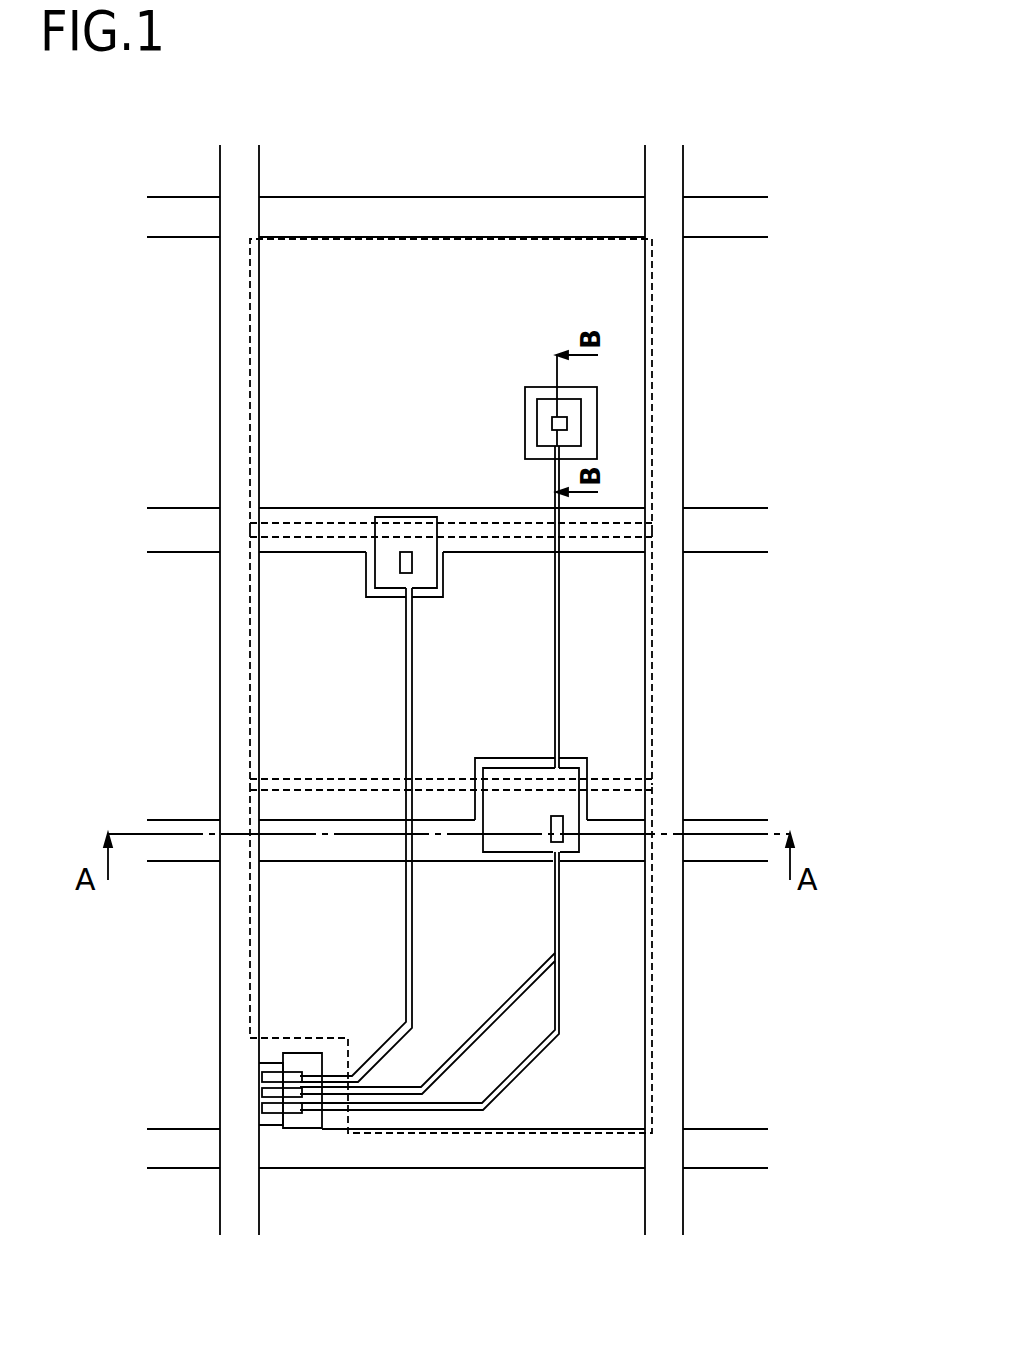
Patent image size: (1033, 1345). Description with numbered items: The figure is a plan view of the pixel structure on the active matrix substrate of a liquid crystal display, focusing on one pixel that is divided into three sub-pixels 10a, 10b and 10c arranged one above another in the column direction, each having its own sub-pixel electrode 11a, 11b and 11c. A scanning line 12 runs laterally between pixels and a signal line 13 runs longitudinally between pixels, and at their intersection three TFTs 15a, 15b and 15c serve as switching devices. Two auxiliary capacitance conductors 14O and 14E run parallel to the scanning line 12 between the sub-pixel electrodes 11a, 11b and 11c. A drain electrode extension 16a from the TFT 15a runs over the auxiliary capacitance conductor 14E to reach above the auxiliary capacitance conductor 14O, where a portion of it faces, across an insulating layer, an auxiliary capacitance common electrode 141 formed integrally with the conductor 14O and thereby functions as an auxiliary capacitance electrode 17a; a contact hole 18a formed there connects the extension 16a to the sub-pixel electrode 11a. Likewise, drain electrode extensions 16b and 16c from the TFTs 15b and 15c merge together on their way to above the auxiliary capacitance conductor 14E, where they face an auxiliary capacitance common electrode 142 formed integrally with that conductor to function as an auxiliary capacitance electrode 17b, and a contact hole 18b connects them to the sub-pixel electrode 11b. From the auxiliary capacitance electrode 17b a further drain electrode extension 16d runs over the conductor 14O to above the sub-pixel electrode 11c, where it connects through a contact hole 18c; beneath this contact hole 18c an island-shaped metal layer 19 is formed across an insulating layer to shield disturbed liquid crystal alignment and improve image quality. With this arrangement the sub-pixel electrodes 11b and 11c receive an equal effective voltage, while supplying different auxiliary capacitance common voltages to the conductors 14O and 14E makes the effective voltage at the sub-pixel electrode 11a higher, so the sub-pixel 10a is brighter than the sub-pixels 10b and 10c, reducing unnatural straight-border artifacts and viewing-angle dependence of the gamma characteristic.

The sub-pixel 10a is at (325, 602).
The sub-pixel 10b is at (325, 902).
The sub-pixel 10c is at (328, 288).
The sub-pixel electrode 11a is at (625, 723).
The sub-pixel electrode 11b is at (620, 1000).
The sub-pixel electrode 11c is at (623, 377).
The scanning line 12 is at (401, 682).
The signal line 13 is at (456, 669).
The auxiliary capacitance conductor 14O is at (424, 530).
The auxiliary capacitance conductor 14E is at (183, 818).
The auxiliary capacitance common electrode 141 is at (372, 592).
The auxiliary capacitance common electrode 142 is at (490, 765).
The TFT 15a is at (258, 1076).
The TFT 15b is at (258, 1092).
The TFT 15c is at (258, 1108).
The drain electrode extension 16a is at (388, 1024).
The drain electrode extension 16b is at (471, 1032).
The drain electrode extension 16c is at (533, 1058).
The drain electrode extension 16d is at (558, 656).
The auxiliary capacitance electrode 17a is at (430, 574).
The auxiliary capacitance electrode 17b is at (510, 845).
The contact hole 18a is at (403, 560).
The contact hole 18b is at (558, 832).
The contact hole 18c is at (553, 421).
The metal layer 19 is at (541, 396).